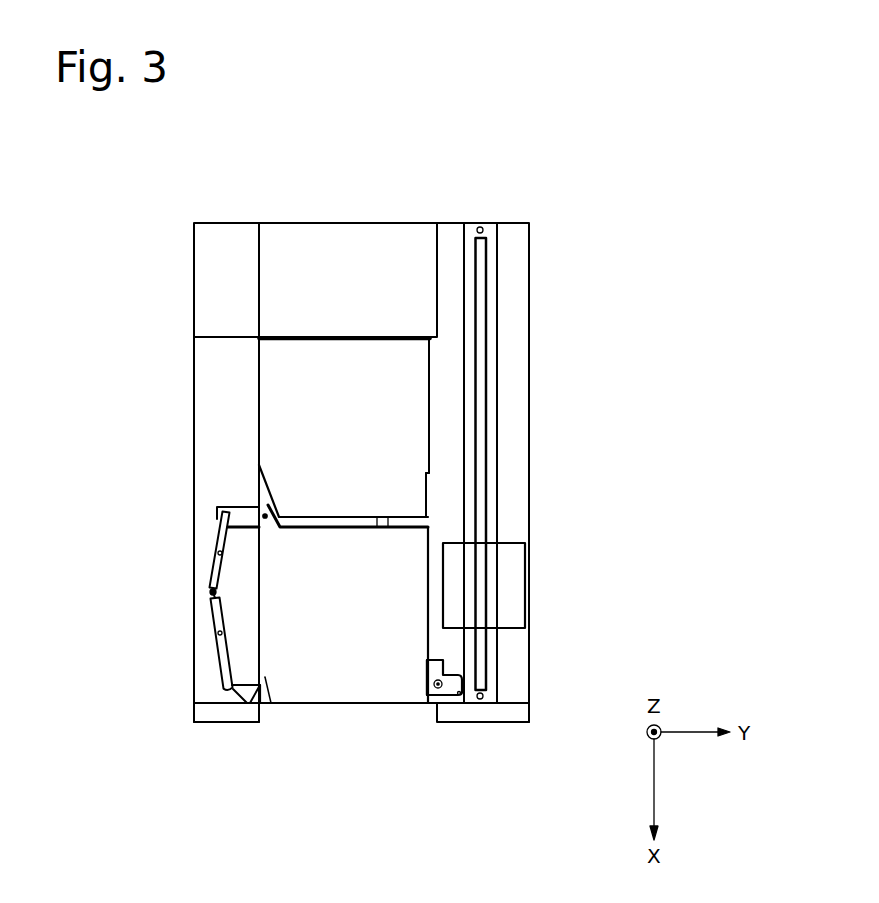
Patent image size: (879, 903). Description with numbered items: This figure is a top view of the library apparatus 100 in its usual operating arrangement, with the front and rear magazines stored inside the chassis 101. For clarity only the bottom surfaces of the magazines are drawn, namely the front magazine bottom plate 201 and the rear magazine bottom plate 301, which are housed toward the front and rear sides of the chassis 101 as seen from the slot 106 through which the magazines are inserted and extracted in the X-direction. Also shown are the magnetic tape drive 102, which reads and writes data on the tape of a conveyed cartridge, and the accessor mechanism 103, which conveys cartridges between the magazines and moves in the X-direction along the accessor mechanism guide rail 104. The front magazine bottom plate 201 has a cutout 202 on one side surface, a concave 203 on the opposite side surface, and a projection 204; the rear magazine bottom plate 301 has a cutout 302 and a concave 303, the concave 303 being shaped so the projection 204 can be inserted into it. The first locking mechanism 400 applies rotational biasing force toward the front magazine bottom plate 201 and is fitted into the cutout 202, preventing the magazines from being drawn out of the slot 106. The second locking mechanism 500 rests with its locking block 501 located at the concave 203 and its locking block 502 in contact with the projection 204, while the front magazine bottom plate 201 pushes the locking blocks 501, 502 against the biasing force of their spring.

The library apparatus 100 is at (562, 202).
The chassis 101 is at (532, 505).
The magnetic tape drive 102 is at (312, 240).
The accessor mechanism 103 is at (508, 570).
The accessor mechanism guide rail 104 is at (487, 275).
The slot 106 is at (363, 705).
The front magazine bottom plate 201 is at (390, 617).
The cutout 202 is at (422, 668).
The concave 203 is at (263, 705).
The projection 204 is at (265, 516).
The rear magazine bottom plate 301 is at (388, 377).
The cutout 302 is at (428, 482).
The concave 303 is at (262, 500).
The first locking mechanism 400 is at (445, 669).
The second locking mechanism 500 is at (208, 648).
The locking block 501 is at (240, 705).
The locking block 502 is at (230, 513).